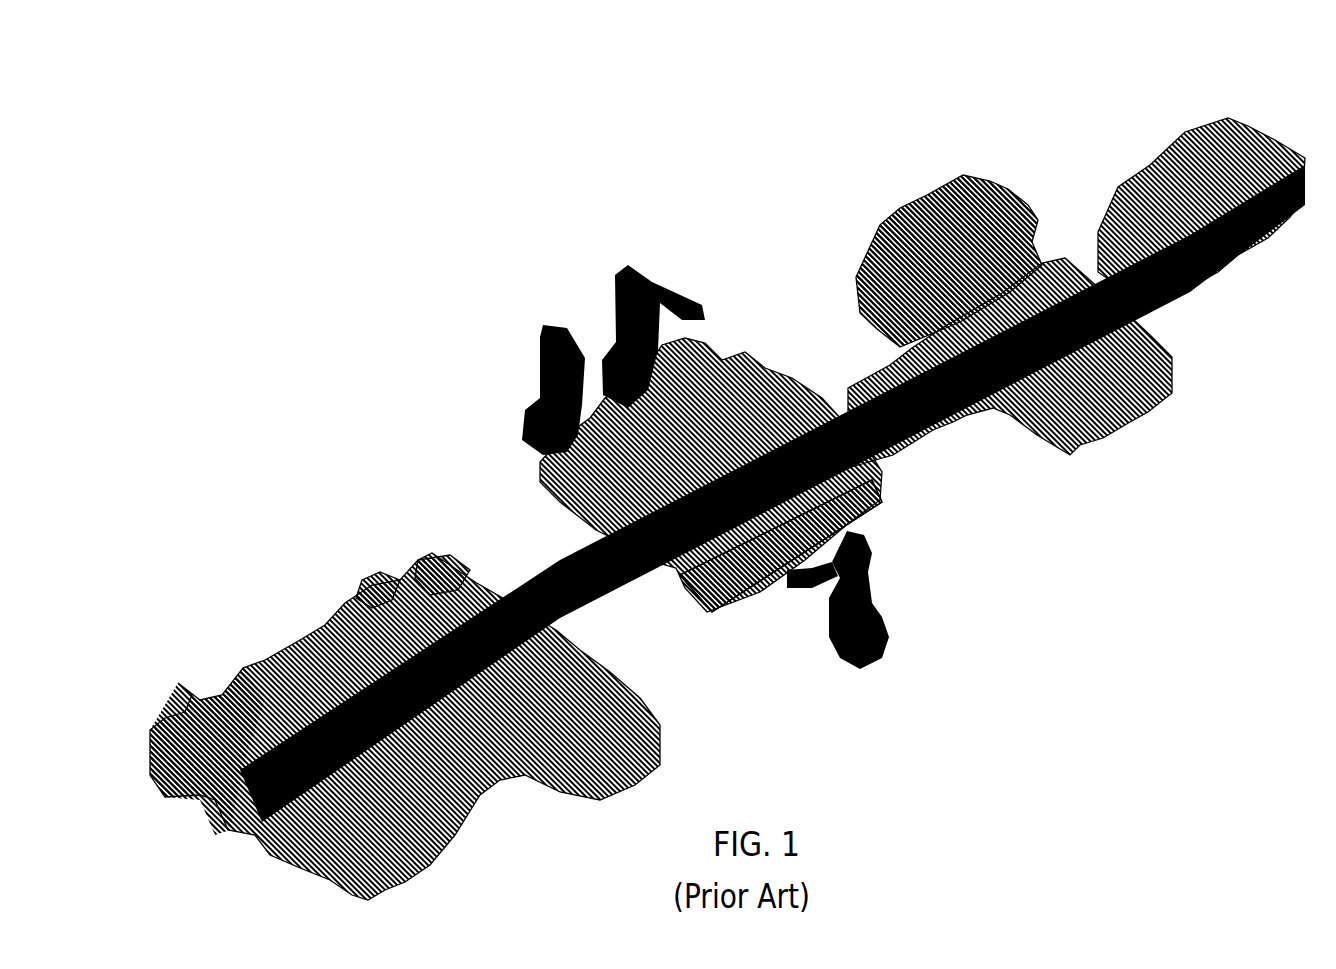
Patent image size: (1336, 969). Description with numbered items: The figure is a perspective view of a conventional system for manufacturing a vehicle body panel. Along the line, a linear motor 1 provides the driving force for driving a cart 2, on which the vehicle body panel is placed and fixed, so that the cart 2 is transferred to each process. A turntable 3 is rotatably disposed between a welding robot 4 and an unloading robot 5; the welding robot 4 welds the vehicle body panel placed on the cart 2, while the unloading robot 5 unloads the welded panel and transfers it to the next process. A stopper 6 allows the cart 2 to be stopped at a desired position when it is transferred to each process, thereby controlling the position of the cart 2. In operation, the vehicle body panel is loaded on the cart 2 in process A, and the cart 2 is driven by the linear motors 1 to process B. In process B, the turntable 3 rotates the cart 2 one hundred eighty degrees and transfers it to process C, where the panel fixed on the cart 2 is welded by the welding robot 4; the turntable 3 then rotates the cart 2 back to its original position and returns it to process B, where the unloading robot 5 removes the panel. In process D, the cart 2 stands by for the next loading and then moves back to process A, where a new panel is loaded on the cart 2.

The linear motor 1 is at (430, 552).
The cart 2 is at (985, 168).
The turntable 3 is at (728, 612).
The welding robot 4 is at (538, 318).
The unloading robot 5 is at (882, 580).
The stopper 6 is at (208, 840).
The process A is at (1201, 210).
The process B is at (781, 558).
The process C is at (673, 336).
The process D is at (949, 251).